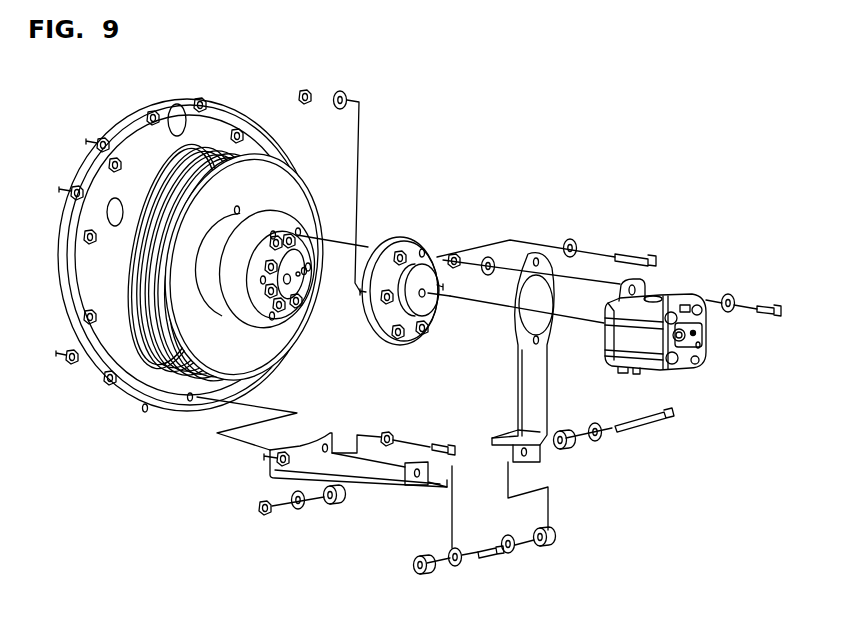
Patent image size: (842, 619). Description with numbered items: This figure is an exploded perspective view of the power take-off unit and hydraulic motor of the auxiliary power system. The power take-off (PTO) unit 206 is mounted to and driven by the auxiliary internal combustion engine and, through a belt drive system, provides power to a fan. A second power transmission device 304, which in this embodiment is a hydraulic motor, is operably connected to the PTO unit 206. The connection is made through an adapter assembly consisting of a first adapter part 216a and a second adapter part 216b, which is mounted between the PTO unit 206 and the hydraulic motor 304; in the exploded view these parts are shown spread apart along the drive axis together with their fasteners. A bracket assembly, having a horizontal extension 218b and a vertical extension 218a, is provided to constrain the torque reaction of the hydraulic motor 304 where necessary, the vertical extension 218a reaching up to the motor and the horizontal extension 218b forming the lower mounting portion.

The power take-off (PTO) unit 206 is at (152, 363).
The first adapter part 216a is at (395, 240).
The second adapter part 216b is at (241, 321).
The vertical extension 218a is at (531, 397).
The horizontal extension 218b is at (362, 472).
The second power transmission device (hydraulic motor) 304 is at (696, 354).